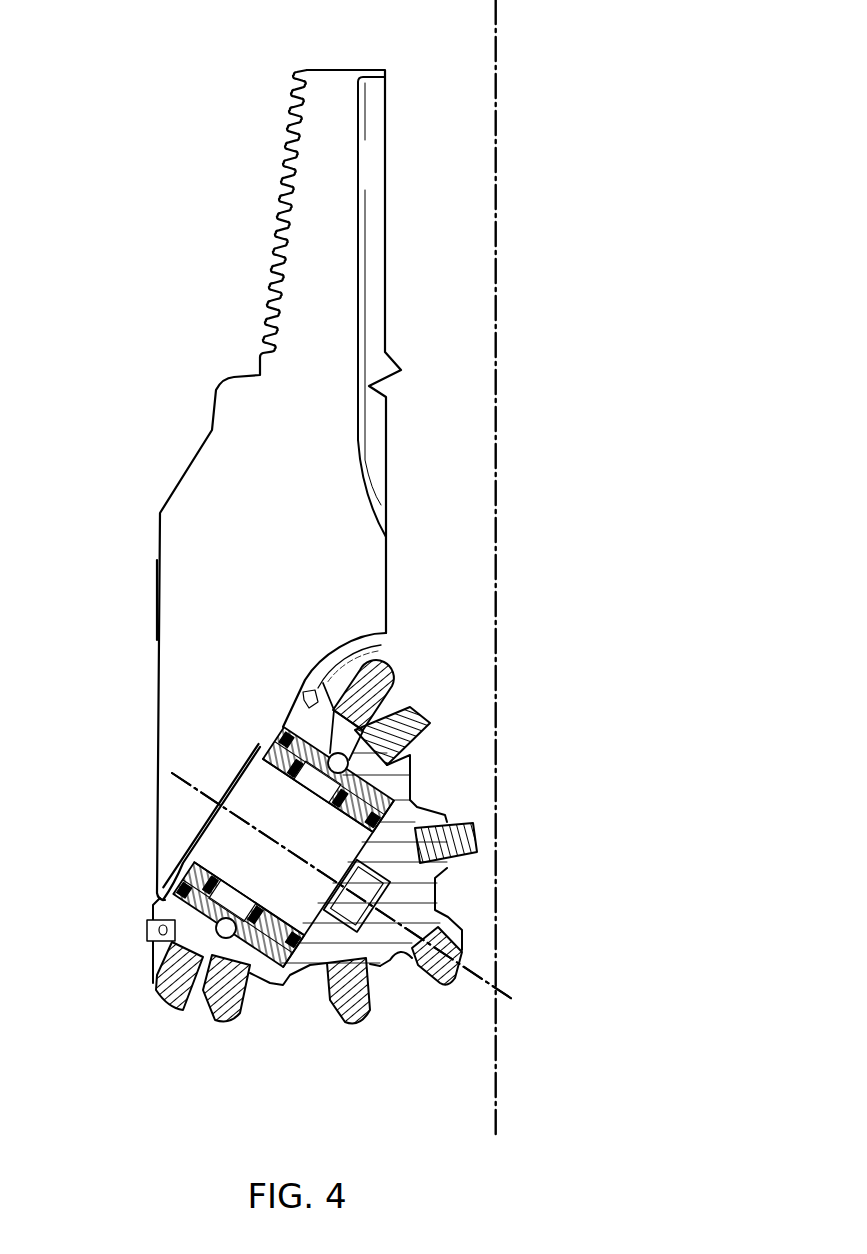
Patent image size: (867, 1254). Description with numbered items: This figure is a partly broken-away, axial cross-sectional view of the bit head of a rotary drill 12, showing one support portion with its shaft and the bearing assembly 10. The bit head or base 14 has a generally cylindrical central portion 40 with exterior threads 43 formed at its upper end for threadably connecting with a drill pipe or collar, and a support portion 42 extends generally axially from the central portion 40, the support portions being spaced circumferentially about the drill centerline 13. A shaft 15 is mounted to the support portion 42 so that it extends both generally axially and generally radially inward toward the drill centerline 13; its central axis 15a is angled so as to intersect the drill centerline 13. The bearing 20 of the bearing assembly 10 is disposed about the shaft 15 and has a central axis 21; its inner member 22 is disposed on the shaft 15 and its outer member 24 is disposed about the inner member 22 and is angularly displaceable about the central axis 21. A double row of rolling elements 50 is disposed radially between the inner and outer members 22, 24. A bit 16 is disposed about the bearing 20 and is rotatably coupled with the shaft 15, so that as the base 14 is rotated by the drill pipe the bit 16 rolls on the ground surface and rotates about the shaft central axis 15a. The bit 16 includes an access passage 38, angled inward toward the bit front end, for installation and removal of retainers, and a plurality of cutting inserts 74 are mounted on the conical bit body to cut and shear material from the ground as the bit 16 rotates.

The bearing assembly 10 is at (282, 985).
The rotary drill 12 is at (133, 397).
The drill centerline 13 is at (497, 200).
The bit head or base 14 is at (150, 537).
The shaft 15 is at (260, 786).
The shaft central axis 15a is at (513, 1000).
The bit 16 is at (395, 962).
The bearing 20 is at (185, 905).
The central axis 21 is at (513, 1000).
The inner member 22 is at (353, 815).
The outer member 24 is at (386, 785).
The access passage 38 is at (345, 738).
The central portion / outer surface 40 is at (206, 594).
The support portion 42 is at (183, 745).
The exterior threads 43 is at (296, 195).
The rolling elements 50 is at (313, 778).
The cutting inserts 74 is at (392, 672).